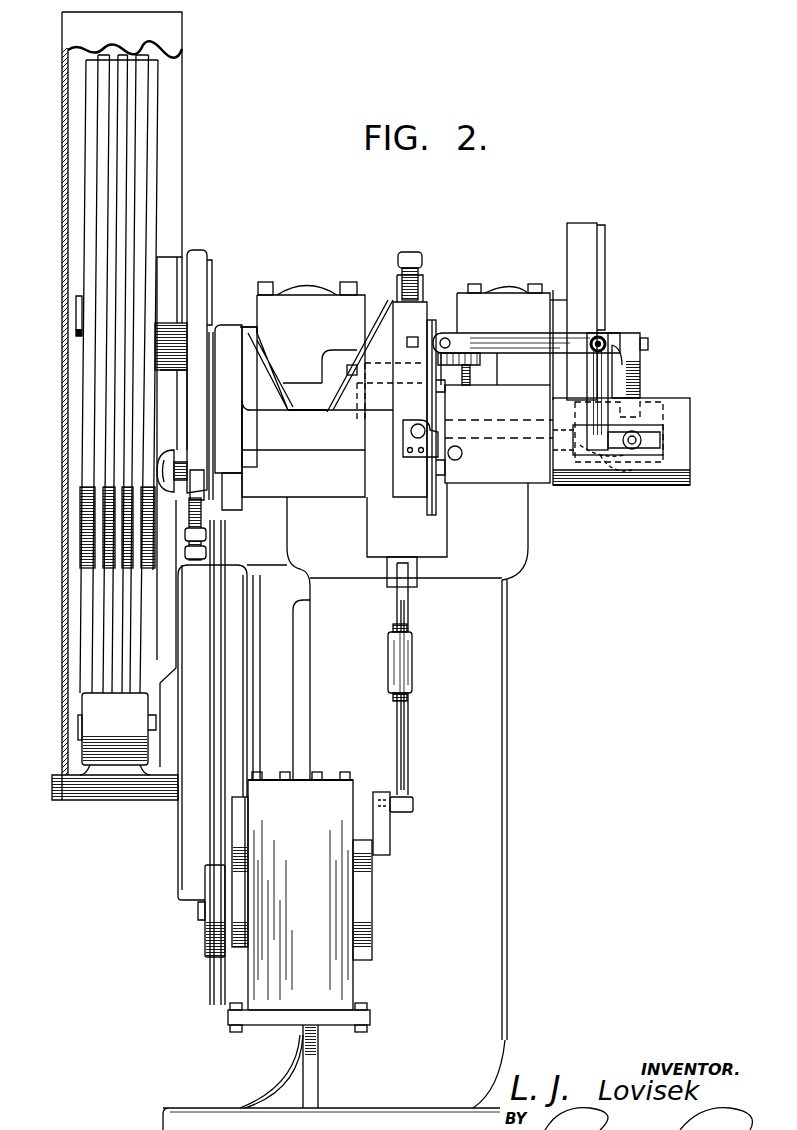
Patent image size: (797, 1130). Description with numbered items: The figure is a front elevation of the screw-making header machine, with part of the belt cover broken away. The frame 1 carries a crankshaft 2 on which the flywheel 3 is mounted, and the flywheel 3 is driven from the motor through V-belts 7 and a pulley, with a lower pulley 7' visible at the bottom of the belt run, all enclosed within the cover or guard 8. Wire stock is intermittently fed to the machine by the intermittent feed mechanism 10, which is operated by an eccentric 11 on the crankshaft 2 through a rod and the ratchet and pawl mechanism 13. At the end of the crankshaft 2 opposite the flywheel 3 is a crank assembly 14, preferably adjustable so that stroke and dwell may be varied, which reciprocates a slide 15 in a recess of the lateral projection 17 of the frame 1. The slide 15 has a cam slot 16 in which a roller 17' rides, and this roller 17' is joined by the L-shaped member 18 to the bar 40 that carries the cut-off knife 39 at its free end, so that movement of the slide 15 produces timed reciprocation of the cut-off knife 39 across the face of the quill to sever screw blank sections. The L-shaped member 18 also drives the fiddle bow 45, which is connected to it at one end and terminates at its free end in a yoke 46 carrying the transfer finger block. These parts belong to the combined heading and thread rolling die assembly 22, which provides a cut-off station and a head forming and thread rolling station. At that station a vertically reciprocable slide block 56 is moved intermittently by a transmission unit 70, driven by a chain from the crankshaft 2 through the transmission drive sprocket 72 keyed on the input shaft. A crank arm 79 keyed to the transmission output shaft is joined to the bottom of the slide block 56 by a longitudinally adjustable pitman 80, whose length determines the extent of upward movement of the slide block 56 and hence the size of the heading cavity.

The frame 1 is at (518, 535).
The crankshaft 2 is at (78, 332).
The flywheel 3 is at (85, 488).
The V-belts 7 is at (90, 564).
The lower pulley 7' is at (90, 734).
The cover or guard 8 is at (64, 44).
The intermittent feed mechanism 10 is at (380, 478).
The eccentric 11 is at (196, 262).
The ratchet and pawl mechanism 13 is at (206, 493).
The crank assembly 14 is at (636, 335).
The slide 15 is at (652, 400).
The cam slot 16 is at (636, 470).
The lateral projection 17 is at (639, 441).
The roller 17' is at (629, 499).
The L-shaped member 18 is at (648, 440).
The combined heading and thread rolling die assembly 22 is at (389, 358).
The cut-off knife 39 is at (452, 430).
The bar 40 is at (478, 438).
The fiddle bow 45 is at (503, 342).
The yoke 46 is at (603, 339).
The slide block 56 is at (410, 585).
The transmission unit 70 is at (347, 988).
The transmission drive sprocket 72 is at (215, 800).
The crank arm 79 is at (385, 838).
The pitman 80 is at (410, 682).